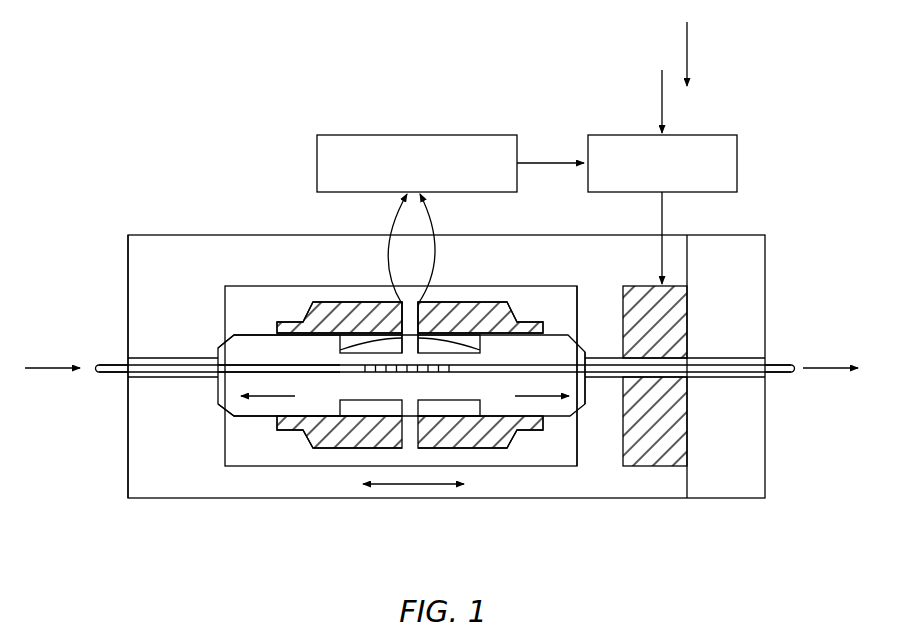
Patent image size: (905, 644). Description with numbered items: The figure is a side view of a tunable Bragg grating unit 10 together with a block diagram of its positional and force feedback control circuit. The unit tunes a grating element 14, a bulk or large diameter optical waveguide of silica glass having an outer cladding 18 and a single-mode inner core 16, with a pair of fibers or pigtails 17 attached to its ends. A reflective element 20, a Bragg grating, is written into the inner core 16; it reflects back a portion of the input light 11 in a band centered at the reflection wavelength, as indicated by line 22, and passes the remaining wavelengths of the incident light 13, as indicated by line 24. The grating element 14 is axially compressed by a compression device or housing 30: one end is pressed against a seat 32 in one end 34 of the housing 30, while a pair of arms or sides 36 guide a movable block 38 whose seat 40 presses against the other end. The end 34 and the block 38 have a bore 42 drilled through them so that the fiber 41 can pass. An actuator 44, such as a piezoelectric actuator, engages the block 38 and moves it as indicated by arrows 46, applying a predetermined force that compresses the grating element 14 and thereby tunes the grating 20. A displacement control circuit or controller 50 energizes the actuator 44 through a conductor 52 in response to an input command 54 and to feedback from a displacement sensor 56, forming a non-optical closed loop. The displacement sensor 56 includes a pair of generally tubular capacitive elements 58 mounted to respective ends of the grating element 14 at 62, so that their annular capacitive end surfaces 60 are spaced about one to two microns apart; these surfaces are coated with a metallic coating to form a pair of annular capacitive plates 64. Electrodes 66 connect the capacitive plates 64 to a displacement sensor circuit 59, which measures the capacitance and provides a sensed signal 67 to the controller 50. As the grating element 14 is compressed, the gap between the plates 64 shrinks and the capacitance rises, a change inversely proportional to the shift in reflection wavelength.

The tunable Bragg grating unit 10 is at (241, 98).
The light 11 is at (52, 362).
The incident light 13 is at (825, 362).
The grating element 14 is at (238, 330).
The inner core 16 is at (218, 406).
The fibers or pigtails 17 is at (112, 380).
The outer cladding 18 is at (262, 363).
The reflective element 20 is at (435, 372).
The reflected light line 22 is at (265, 403).
The passed light line 24 is at (542, 398).
The compression device or housing 30 is at (165, 230).
The seat 32 is at (222, 338).
The end of housing 34 is at (128, 276).
The arms or sides 36 is at (545, 245).
The movable block 38 is at (606, 295).
The seat 40 is at (580, 347).
The fiber 41 is at (103, 363).
The bore 42 is at (165, 380).
The actuator 44 is at (678, 312).
The arrows 46 is at (412, 488).
The displacement control circuit or controller 50 is at (715, 135).
The conductor 52 is at (663, 212).
The input command 54 is at (687, 45).
The displacement sensor 56 is at (450, 298).
The capacitive elements 58 is at (330, 300).
The displacement sensor circuit 59 is at (436, 133).
The capacitive end surface 60 is at (340, 349).
The mounting location 62 is at (292, 450).
The capacitive plates 64 is at (411, 302).
The electrodes 66 is at (393, 220).
The sensed signal 67 is at (553, 158).